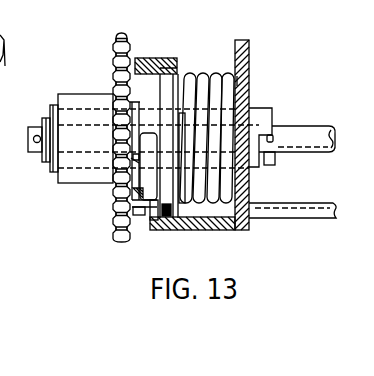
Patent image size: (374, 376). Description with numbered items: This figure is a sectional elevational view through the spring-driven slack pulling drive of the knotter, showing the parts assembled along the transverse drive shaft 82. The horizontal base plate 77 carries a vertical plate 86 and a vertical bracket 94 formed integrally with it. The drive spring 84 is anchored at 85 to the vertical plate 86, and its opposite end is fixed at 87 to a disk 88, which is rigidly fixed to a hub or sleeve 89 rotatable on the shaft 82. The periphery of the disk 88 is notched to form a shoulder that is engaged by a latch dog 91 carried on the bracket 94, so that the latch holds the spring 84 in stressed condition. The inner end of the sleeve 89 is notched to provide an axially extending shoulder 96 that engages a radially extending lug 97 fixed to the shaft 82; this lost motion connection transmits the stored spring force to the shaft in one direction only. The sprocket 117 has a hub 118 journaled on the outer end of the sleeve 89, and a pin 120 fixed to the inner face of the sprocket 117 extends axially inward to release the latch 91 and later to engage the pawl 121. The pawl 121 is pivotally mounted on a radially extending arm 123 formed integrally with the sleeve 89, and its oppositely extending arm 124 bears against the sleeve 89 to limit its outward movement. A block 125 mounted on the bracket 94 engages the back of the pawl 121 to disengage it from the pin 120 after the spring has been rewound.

The base plate 77 is at (305, 214).
The drive shaft 82 is at (319, 128).
The spring 84 is at (201, 74).
The anchor 85 is at (249, 81).
The vertical plate 86 is at (249, 61).
The spring fixing point 87 is at (173, 117).
The disk 88 is at (150, 221).
The sleeve 89 is at (48, 115).
The latch dog 91 is at (172, 62).
The vertical bracket 94 is at (208, 226).
The axially extending shoulder 96 is at (275, 137).
The lug 97 is at (276, 158).
The sprocket 117 is at (120, 33).
The hub 118 is at (80, 101).
The pin 120 is at (137, 215).
The pawl 121 is at (114, 193).
The radially extending arm 123 is at (140, 157).
The oppositely extending arm 124 is at (133, 160).
The block 125 is at (152, 218).